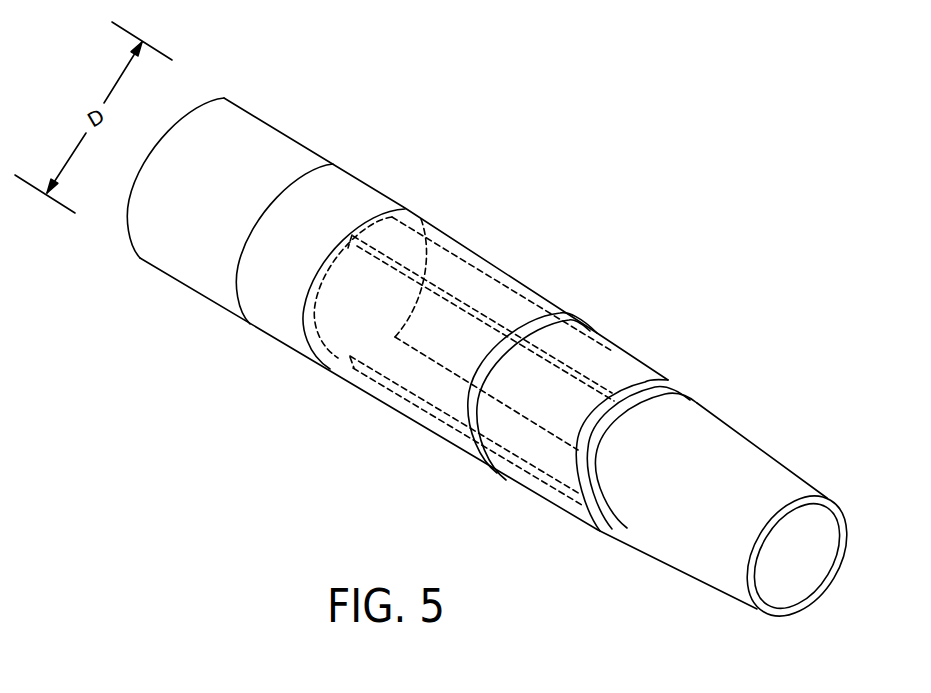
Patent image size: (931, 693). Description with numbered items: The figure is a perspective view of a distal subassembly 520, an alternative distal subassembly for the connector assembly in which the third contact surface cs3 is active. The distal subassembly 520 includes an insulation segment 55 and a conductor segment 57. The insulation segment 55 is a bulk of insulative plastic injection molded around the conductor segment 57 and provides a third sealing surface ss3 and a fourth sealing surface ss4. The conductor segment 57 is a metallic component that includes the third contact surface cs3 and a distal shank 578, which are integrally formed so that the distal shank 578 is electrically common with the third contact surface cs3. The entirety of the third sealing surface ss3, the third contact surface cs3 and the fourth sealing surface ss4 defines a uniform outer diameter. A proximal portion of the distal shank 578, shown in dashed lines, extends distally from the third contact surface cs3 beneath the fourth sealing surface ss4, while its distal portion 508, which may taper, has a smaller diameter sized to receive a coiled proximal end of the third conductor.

The distal subassembly 520 is at (496, 118).
The insulation segment 55 is at (394, 401).
The conductor segment 57 is at (665, 412).
The distal shank 578 is at (768, 457).
The distal portion 508 is at (747, 643).
The third sealing surface ss3 is at (220, 201).
The third contact surface cs3 is at (288, 289).
The fourth sealing surface ss4 is at (460, 346).